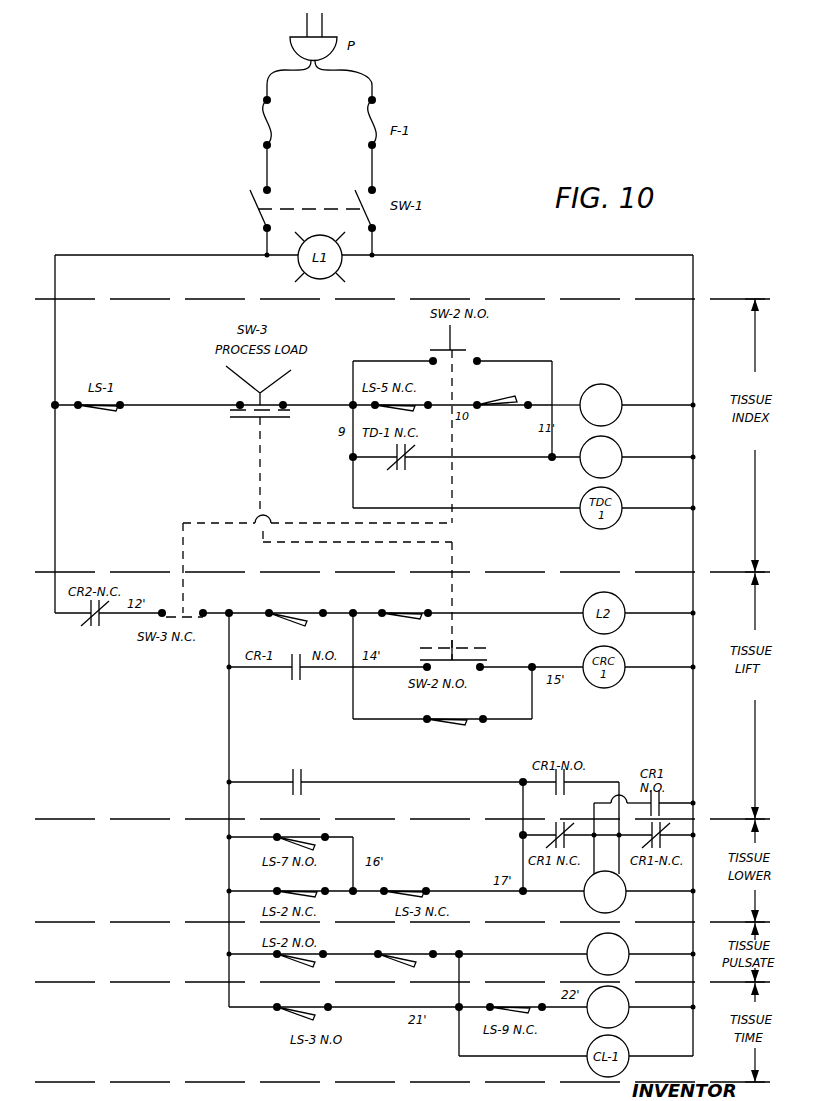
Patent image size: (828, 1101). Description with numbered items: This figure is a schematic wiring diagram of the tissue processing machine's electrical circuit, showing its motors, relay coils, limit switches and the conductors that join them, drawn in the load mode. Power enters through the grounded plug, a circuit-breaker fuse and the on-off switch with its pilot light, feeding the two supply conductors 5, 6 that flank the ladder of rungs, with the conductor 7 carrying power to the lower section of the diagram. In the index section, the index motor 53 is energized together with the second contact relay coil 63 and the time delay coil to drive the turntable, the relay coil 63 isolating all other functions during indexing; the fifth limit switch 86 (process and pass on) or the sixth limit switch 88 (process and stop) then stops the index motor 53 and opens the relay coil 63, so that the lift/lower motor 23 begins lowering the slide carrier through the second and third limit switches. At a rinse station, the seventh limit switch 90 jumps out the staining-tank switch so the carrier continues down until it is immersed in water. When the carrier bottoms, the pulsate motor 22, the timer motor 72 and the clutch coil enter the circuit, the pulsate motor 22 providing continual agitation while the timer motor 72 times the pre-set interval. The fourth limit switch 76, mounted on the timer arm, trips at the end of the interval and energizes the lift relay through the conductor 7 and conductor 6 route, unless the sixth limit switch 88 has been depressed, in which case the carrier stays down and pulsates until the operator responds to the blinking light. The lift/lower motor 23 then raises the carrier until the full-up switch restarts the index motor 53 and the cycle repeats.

The supply conductor 5 is at (47, 434).
The supply conductor 6 is at (702, 655).
The conductor 7 is at (366, 777).
The index motor 53 is at (618, 393).
The control relay CRC2 63 is at (618, 447).
The limit switch No. 6 88 is at (516, 405).
The limit switch No. 4 76 is at (296, 629).
The limit switch No. 5 86 is at (396, 618).
The lift/lower motor 23 is at (622, 903).
The pulsate motor 22 is at (626, 966).
The timer motor 72 is at (627, 1019).
The limit switch No. 7 90 is at (388, 962).